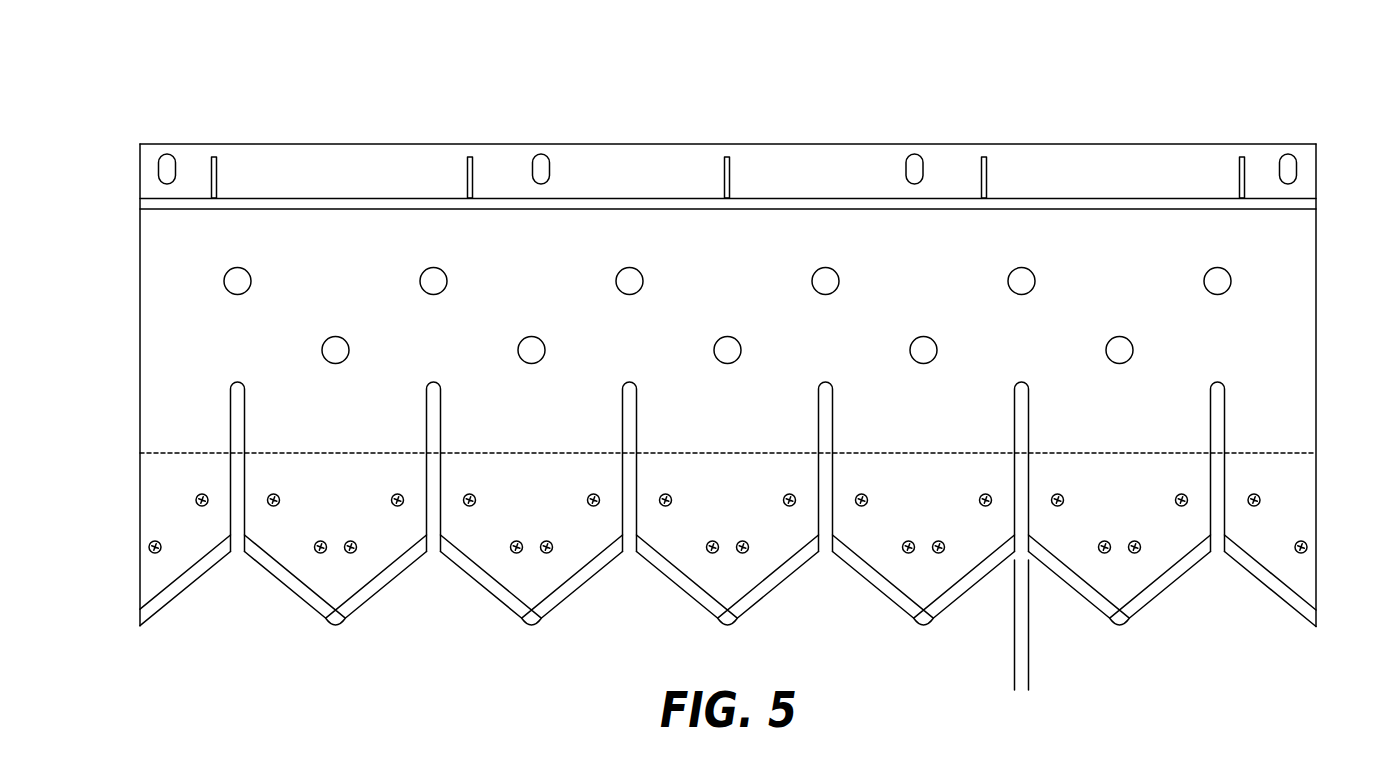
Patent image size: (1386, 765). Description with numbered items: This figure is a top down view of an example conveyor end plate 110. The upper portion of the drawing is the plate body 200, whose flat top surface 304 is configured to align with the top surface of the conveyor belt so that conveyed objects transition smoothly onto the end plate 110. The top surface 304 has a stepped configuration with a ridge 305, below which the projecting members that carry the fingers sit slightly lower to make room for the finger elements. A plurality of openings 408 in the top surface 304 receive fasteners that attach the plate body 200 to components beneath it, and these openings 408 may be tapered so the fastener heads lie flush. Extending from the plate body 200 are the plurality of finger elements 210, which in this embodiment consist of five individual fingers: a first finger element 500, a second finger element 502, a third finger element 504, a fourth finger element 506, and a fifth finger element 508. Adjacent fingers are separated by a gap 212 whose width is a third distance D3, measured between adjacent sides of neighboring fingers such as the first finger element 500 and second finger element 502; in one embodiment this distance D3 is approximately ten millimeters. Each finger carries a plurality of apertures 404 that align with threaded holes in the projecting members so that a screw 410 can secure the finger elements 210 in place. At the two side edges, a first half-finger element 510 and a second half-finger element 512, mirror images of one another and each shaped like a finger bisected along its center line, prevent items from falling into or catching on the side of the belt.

The conveyor end plate 110 is at (608, 92).
The plate body 200 is at (1288, 303).
The top surface 304 is at (765, 238).
The ridge 305 is at (139, 453).
The plurality of openings 408 is at (336, 337).
The plurality of finger elements 210 is at (592, 625).
The gap 212 is at (1218, 419).
The first finger element 500 is at (1090, 601).
The second finger element 502 is at (868, 580).
The third finger element 504 is at (680, 587).
The fourth finger element 506 is at (495, 596).
The fifth finger element 508 is at (297, 594).
The first half-finger element 510 is at (173, 599).
The second half-finger element 512 is at (1260, 580).
The plurality of apertures 404 is at (1175, 505).
The screw 410 is at (1178, 496).
The third distance D3 is at (980, 675).